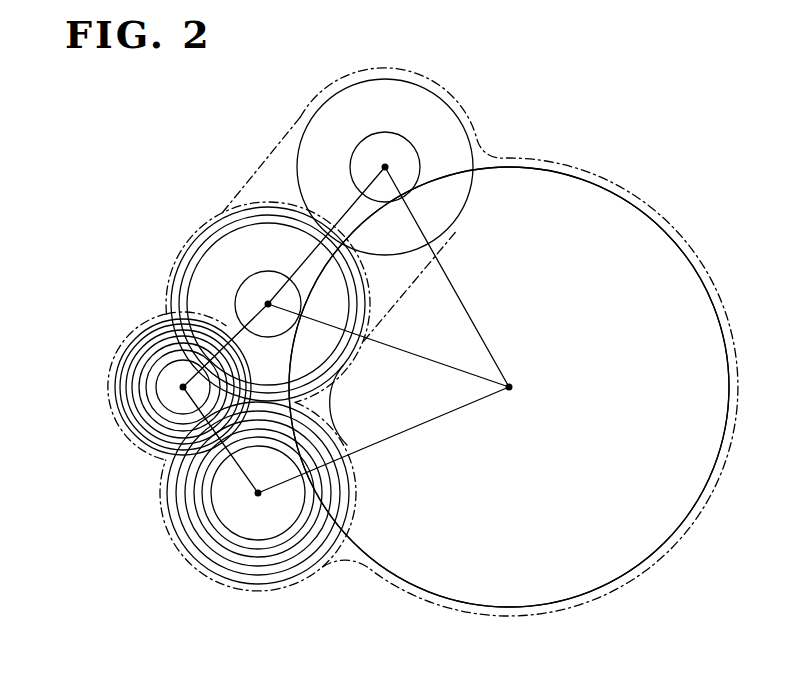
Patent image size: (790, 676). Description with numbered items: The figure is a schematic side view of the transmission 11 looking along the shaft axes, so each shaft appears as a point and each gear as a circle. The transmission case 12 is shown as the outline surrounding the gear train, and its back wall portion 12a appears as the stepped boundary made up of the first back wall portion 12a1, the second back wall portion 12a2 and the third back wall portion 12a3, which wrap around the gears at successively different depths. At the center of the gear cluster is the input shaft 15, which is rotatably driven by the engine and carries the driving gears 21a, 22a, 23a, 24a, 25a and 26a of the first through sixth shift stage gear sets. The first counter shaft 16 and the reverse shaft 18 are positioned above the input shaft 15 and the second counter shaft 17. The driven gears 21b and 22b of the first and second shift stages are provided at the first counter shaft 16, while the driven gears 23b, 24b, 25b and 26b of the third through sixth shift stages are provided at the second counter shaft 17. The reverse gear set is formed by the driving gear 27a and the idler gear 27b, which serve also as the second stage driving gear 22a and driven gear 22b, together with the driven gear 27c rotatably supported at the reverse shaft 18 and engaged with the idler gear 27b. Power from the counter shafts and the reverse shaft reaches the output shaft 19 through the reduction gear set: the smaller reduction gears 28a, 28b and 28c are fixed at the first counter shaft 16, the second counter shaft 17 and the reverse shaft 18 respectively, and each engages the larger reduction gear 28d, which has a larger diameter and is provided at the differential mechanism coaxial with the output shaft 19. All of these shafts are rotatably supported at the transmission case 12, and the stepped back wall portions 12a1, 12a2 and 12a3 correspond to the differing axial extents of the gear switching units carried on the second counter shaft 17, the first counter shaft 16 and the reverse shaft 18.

The transmission 11 is at (628, 119).
The transmission case 12 is at (488, 148).
The back wall portion 12a is at (413, 300).
The first back wall portion 12a1 is at (160, 292).
The second back wall portion 12a2 is at (228, 200).
The third back wall portion 12a3 is at (278, 133).
The input shaft 15 is at (183, 387).
The first counter shaft 16 is at (268, 304).
The second counter shaft 17 is at (258, 493).
The reverse shaft 18 is at (385, 167).
The output shaft 19 is at (509, 387).
The driving gear 21a is at (160, 357).
The driven gear 21b is at (213, 227).
The driving gear 22a is at (158, 368).
The driven gear 22b is at (261, 222).
The driving gear 23a is at (183, 387).
The driven gear 23b is at (176, 488).
The driving gear 24a is at (134, 386).
The driven gear 24b is at (193, 531).
The driving gear 25a is at (137, 426).
The driven gear 25b is at (216, 548).
The driving gear 26a is at (126, 400).
The driven gear 26b is at (270, 586).
The driving gear 27a is at (183, 387).
The idler gear 27b is at (268, 304).
The driven gear 27c is at (421, 84).
The reduction gear 28a is at (272, 271).
The reduction gear 28b is at (306, 500).
The reduction gear 28c is at (368, 138).
The reduction gear 28d is at (637, 207).